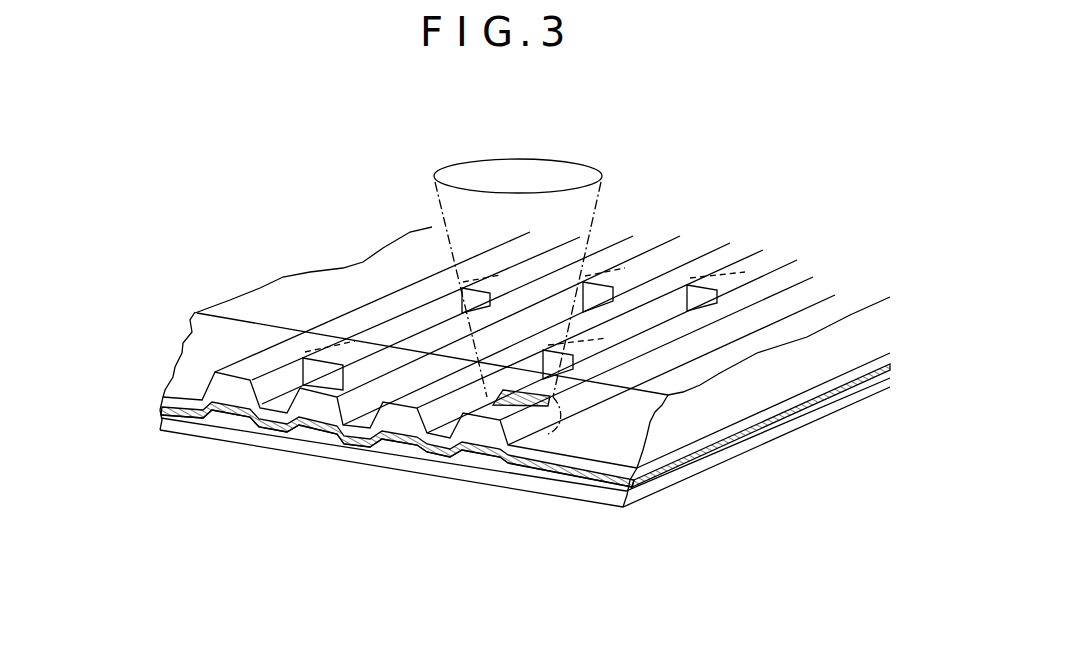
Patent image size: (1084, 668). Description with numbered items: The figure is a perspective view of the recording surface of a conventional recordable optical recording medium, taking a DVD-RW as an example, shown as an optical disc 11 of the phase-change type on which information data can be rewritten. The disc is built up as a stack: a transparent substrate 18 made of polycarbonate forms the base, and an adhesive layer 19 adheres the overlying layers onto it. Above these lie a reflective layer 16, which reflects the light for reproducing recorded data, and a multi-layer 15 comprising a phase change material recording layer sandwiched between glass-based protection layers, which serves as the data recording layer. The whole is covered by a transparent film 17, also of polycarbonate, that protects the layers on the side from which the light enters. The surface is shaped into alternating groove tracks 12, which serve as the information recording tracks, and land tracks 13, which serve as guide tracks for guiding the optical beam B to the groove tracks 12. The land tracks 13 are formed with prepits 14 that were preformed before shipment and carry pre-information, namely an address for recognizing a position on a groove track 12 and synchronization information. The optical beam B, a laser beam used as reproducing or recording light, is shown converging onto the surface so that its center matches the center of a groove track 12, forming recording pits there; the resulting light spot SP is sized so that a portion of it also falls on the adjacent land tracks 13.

The optical disc 11 is at (720, 493).
The groove tracks 12 is at (795, 215).
The land tracks 13 is at (427, 523).
The prepits 14 is at (340, 355).
The multi-layer 15 is at (350, 430).
The reflective layer 16 is at (273, 435).
The transparent film 17 is at (780, 480).
The transparent substrate 18 is at (537, 490).
The adhesive layer 19 is at (220, 422).
The optical beam B is at (610, 180).
The light spot SP is at (530, 410).